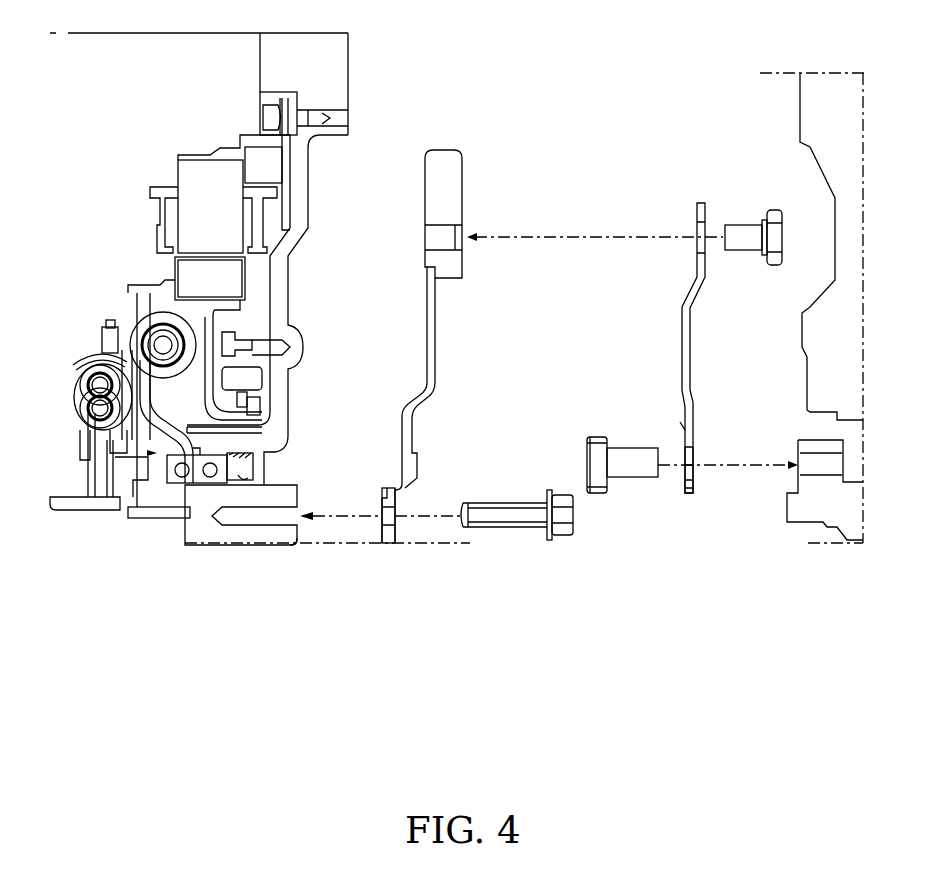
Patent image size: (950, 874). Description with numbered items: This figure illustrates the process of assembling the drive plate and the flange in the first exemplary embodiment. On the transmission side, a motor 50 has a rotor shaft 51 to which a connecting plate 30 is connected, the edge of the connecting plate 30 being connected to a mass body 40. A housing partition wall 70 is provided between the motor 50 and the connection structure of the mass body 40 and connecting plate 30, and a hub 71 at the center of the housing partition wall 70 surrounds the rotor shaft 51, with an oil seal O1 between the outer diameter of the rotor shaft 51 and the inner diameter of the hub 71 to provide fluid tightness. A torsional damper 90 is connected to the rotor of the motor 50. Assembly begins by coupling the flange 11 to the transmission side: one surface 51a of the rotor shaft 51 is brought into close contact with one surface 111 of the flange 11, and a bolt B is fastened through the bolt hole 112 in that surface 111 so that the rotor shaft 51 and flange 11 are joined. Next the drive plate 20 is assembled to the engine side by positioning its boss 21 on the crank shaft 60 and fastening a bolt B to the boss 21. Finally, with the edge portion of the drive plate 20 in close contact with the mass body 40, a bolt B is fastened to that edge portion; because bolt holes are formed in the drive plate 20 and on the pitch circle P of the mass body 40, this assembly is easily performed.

The flange 11 is at (390, 543).
The one surface of the flange 111 is at (380, 535).
The bolt hole 112 is at (398, 520).
The drive plate 20 is at (688, 342).
The boss 21 is at (683, 488).
The connecting plate 30 is at (437, 322).
The mass body 40 is at (460, 172).
The motor 50 is at (177, 163).
The rotor shaft 51 is at (288, 483).
The one surface of the rotor shaft 51a is at (300, 546).
The crank shaft 60 is at (858, 507).
The housing partition wall 70 is at (297, 250).
The hub 71 is at (150, 445).
The torsional damper 90 is at (80, 345).
The oil seal O1 is at (247, 473).
The bolt B is at (743, 223).
The pitch circle P is at (522, 517).